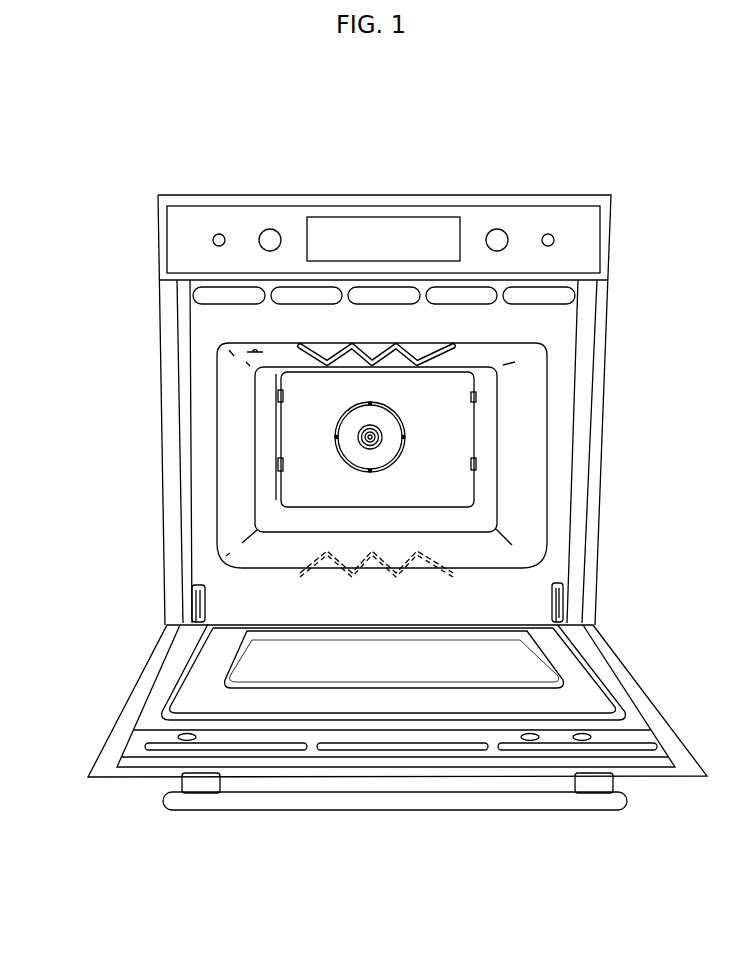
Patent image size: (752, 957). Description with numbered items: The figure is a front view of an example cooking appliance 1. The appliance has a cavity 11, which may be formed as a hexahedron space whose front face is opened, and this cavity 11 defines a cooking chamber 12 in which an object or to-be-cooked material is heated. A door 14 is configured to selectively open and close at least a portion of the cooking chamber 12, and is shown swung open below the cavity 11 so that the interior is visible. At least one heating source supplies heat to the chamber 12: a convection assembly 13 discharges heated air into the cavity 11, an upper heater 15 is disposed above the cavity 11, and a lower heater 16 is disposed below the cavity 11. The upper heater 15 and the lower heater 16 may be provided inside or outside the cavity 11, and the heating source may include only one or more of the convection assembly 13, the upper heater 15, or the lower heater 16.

The cooking appliance 1 is at (112, 165).
The cavity 11 is at (223, 367).
The cooking chamber 12 is at (252, 348).
The convection assembly 13 is at (326, 438).
The door 14 is at (120, 694).
The upper heater 15 is at (450, 352).
The lower heater 16 is at (450, 562).